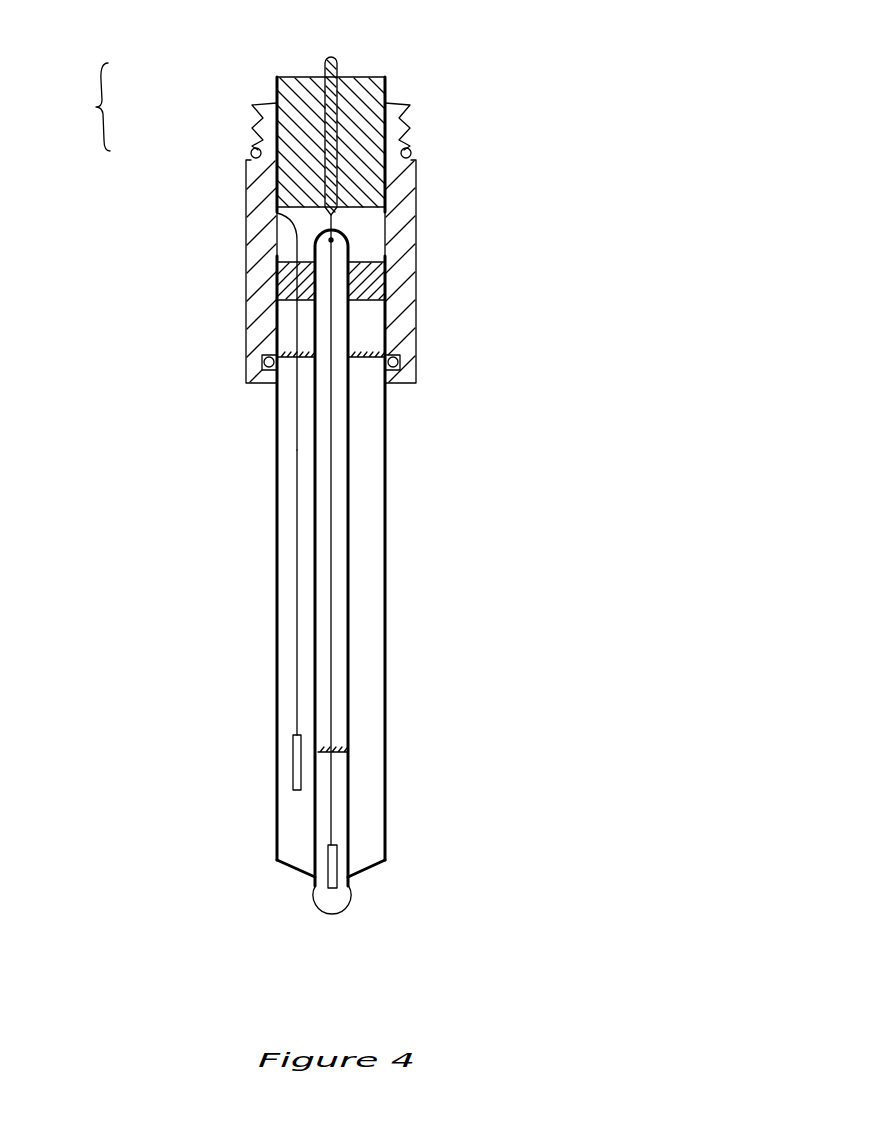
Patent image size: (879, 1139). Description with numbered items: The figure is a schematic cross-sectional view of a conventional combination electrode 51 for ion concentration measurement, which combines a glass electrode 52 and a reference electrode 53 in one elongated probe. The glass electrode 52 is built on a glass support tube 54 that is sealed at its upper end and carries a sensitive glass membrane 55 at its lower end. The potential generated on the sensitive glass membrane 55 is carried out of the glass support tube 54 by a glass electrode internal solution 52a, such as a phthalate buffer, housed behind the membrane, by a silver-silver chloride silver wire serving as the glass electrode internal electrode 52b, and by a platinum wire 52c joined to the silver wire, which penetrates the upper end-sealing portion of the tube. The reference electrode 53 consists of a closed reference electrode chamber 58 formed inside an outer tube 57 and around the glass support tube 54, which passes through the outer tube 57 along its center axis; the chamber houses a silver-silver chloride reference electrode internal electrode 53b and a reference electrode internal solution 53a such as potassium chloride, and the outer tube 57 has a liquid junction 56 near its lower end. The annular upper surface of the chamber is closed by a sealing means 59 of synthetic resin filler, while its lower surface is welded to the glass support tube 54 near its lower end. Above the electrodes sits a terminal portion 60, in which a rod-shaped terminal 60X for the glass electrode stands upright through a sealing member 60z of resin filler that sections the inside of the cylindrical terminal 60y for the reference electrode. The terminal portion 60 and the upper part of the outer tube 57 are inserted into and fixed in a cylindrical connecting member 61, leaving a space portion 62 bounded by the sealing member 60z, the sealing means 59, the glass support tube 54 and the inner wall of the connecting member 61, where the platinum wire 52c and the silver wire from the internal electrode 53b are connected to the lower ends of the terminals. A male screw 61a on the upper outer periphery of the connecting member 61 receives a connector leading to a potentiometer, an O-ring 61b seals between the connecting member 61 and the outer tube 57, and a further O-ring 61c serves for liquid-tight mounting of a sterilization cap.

The combination electrode 51 is at (422, 71).
The glass electrode 52 is at (356, 429).
The glass electrode internal solution 52a is at (339, 763).
The glass electrode internal electrode 52b is at (332, 855).
The platinum wire 52c is at (337, 220).
The reference electrode 53 is at (269, 545).
The reference electrode internal solution 53a is at (288, 628).
The reference electrode internal electrode 53b is at (298, 750).
The glass support tube 54 is at (349, 490).
The sensitive glass membrane 55 is at (353, 898).
The liquid junction 56 is at (389, 852).
The outer tube 57 is at (275, 498).
The reference electrode chamber 58 is at (284, 441).
The sealing means 59 is at (288, 278).
The terminal portion 60 is at (82, 107).
The terminal for a glass electrode 60X is at (333, 97).
The terminal for a reference electrode 60y is at (260, 128).
The sealing member 60z is at (298, 187).
The connecting member 61 is at (402, 183).
The male screw 61a is at (407, 122).
The O-ring 61b is at (398, 360).
The O-ring 61c is at (409, 153).
The space portion 62 is at (373, 240).